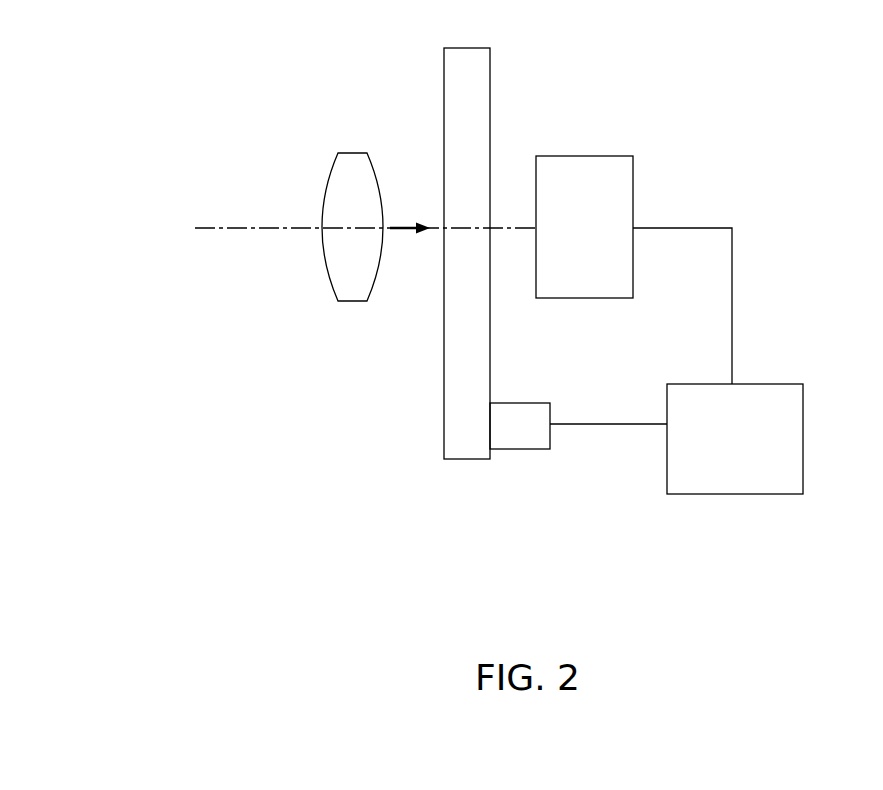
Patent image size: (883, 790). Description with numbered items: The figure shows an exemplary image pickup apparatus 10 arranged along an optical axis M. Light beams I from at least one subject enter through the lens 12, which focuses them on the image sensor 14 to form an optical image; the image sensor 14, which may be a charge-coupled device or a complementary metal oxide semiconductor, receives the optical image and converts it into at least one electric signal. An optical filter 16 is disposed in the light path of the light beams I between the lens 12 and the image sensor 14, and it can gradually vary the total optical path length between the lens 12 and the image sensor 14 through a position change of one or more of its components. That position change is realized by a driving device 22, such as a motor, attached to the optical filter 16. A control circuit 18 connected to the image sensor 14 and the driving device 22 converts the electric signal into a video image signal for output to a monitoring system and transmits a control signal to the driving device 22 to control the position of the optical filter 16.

The image pickup apparatus 10 is at (143, 83).
The lens 12 is at (333, 200).
The image sensor 14 is at (574, 168).
The optical filter 16 is at (449, 173).
The control circuit 18 is at (758, 398).
The driving device 22 is at (521, 440).
The optical axis (measurement direction) M is at (240, 229).
The light beams I is at (410, 217).